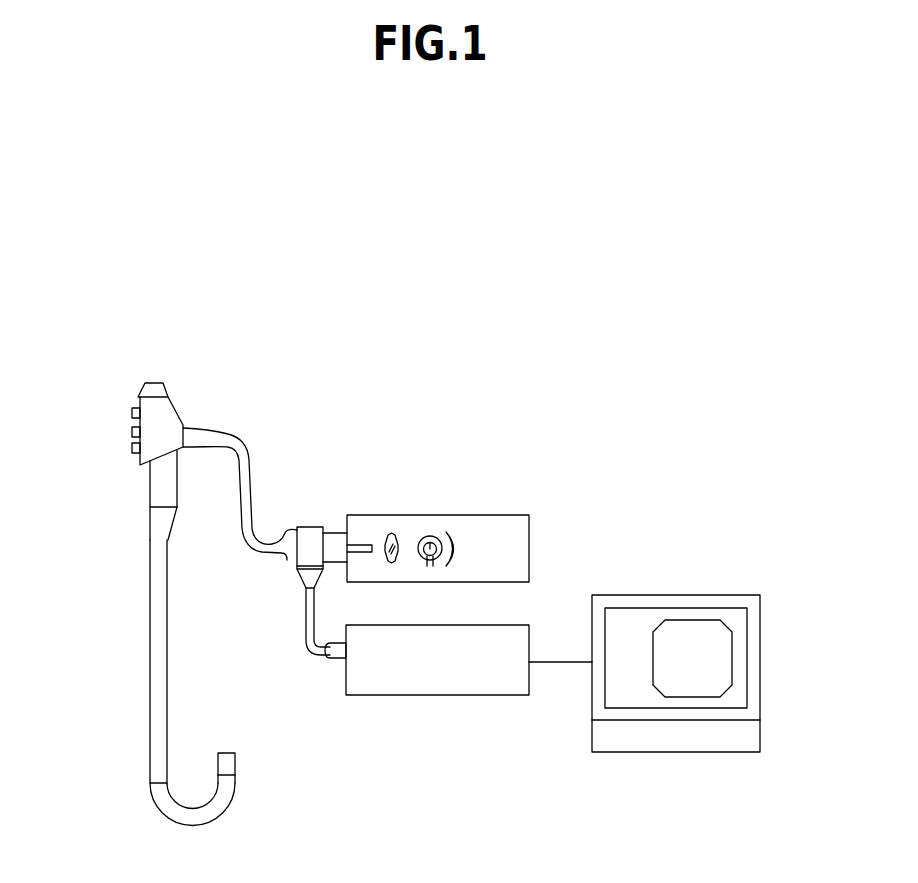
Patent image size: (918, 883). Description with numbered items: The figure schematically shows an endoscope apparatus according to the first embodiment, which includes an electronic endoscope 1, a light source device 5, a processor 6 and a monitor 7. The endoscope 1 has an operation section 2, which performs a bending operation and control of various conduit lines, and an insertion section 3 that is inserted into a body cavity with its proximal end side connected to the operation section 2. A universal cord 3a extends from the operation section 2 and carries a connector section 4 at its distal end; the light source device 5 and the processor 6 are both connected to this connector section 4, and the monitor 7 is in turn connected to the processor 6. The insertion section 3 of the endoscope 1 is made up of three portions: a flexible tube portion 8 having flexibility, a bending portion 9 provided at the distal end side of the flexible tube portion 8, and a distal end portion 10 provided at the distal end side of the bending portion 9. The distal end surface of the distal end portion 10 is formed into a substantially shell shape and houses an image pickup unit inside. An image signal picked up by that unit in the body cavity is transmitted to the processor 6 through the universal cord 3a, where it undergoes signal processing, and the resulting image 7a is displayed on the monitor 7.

The electronic endoscope 1 is at (249, 364).
The operation section 2 is at (173, 446).
The insertion section 3 is at (126, 732).
The universal cord 3a is at (246, 448).
The connector section 4 is at (284, 552).
The light source device 5 is at (427, 513).
The processor 6 is at (427, 697).
The monitor 7 is at (677, 593).
The image 7a is at (742, 627).
The flexible tube portion 8 is at (167, 657).
The bending portion 9 is at (230, 808).
The distal end portion 10 is at (235, 763).